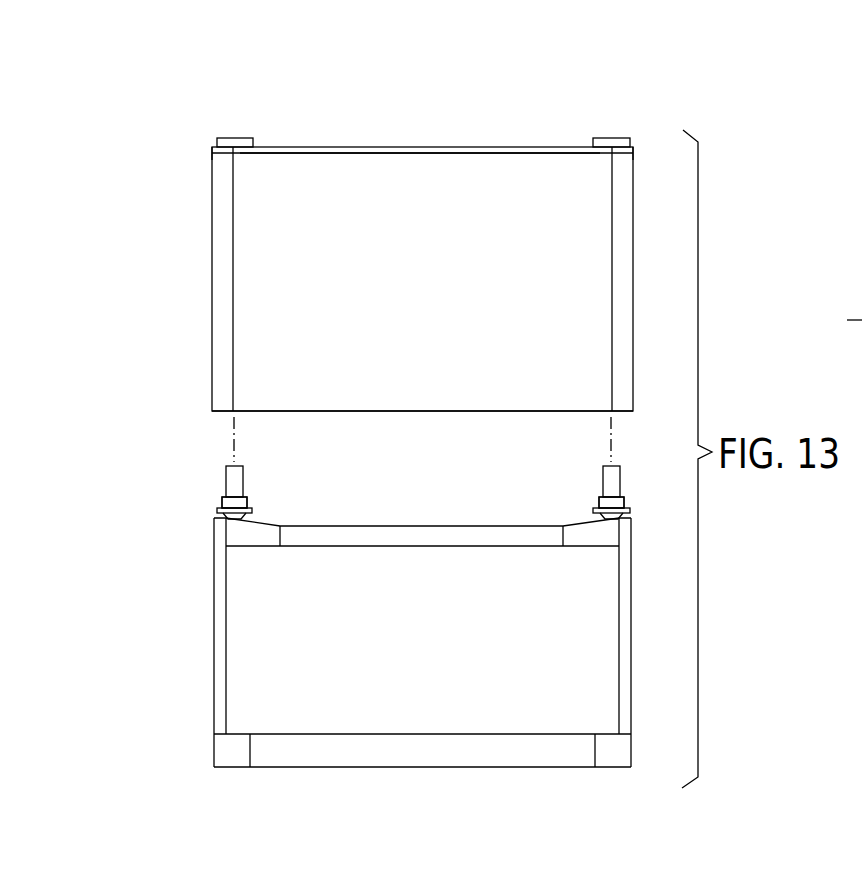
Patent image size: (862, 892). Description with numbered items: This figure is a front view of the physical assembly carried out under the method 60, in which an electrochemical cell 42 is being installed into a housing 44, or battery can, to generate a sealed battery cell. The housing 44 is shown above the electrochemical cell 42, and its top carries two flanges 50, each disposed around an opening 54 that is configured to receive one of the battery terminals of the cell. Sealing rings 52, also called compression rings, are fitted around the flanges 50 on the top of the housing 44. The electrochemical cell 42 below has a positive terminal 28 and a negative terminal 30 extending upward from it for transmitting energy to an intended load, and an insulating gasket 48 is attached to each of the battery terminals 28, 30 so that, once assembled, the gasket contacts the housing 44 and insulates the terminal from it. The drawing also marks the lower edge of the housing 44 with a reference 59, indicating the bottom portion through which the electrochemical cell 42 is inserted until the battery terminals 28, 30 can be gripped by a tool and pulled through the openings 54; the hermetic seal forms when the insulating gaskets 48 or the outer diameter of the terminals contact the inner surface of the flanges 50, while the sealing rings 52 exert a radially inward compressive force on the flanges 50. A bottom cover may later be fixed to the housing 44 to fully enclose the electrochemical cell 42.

The positive terminal 28 is at (210, 465).
The negative terminal 30 is at (636, 466).
The electrochemical cell 42 is at (650, 660).
The housing 44 is at (650, 305).
The insulating gasket 48 is at (265, 500).
The flange 50 is at (270, 147).
The sealing ring 52 is at (213, 147).
The opening 54 is at (240, 128).
The cover bottom edge 59 is at (313, 420).
The method 60 is at (860, 318).